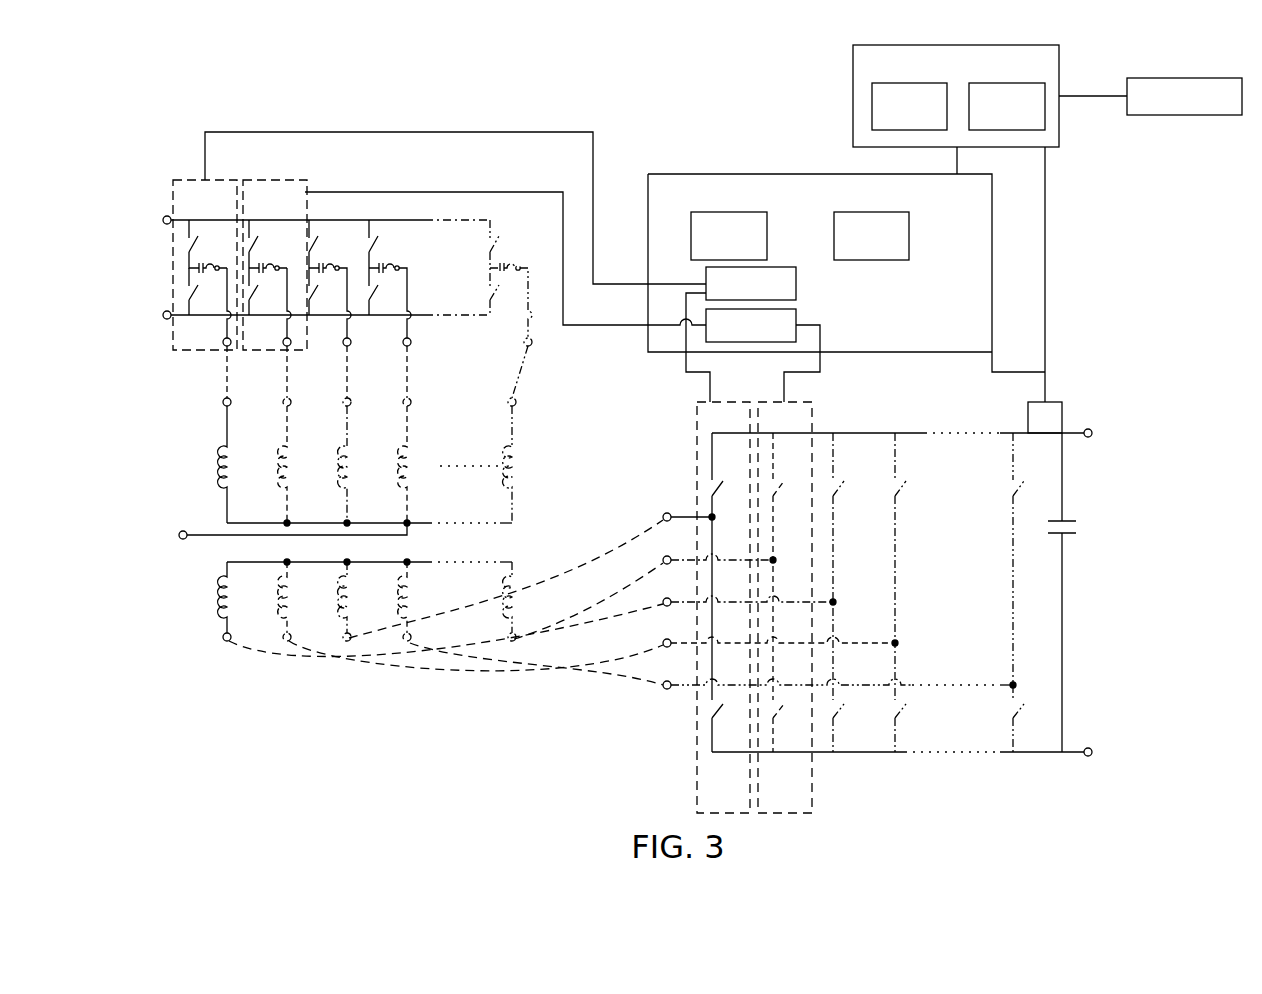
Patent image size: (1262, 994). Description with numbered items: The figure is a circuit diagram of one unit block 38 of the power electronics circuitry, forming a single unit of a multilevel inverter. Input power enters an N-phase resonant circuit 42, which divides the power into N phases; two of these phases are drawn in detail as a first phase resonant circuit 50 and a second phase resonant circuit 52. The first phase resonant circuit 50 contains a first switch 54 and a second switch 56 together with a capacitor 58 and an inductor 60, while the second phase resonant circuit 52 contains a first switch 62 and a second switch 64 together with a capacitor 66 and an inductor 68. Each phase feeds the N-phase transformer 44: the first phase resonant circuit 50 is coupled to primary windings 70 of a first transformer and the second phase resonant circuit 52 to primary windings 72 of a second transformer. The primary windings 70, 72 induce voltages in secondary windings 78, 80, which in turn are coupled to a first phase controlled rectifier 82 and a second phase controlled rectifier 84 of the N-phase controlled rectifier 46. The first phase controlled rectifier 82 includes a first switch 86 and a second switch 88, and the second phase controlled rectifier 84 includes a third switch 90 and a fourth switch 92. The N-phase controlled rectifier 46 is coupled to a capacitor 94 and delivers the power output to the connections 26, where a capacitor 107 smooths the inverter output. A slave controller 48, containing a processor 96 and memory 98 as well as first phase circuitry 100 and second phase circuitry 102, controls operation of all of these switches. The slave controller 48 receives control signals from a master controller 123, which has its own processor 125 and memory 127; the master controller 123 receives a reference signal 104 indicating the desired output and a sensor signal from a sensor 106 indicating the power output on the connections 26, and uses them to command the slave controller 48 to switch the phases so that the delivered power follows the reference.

The connections 26 is at (1093, 433).
The unit block 38 is at (256, 98).
The N-phase resonant circuit 42 is at (176, 128).
The N-phase transformer 44 is at (565, 516).
The N-phase controlled rectifier 46 is at (858, 418).
The slave controller 48 is at (992, 276).
The first phase resonant circuit 50 is at (172, 190).
The second phase resonant circuit 52 is at (306, 188).
The first switch 54 is at (186, 241).
The second switch 56 is at (186, 292).
The capacitor 58 is at (182, 245).
The inductor 60 is at (200, 266).
The first switch 62 is at (267, 245).
The second switch 64 is at (254, 305).
The capacitor 66 is at (258, 266).
The inductor 68 is at (297, 252).
The primary windings 70 is at (222, 450).
The primary windings 72 is at (290, 455).
The secondary windings 78 is at (222, 582).
The secondary windings 80 is at (277, 622).
The first phase controlled rectifier 82 is at (696, 410).
The second phase controlled rectifier 84 is at (813, 405).
The first switch 86 is at (702, 490).
The second switch 88 is at (703, 715).
The third switch 90 is at (775, 500).
The fourth switch 92 is at (778, 740).
The capacitor 94 is at (1068, 533).
The processor 96 is at (696, 212).
The memory 98 is at (910, 237).
The first phase circuitry 100 is at (797, 284).
The second phase circuitry 102 is at (797, 320).
The reference signal 104 is at (1186, 118).
The sensor 106 is at (1063, 406).
The capacitor 107 is at (1104, 530).
The master controller 123 is at (853, 62).
The processor 125 is at (871, 104).
The memory 127 is at (1046, 122).